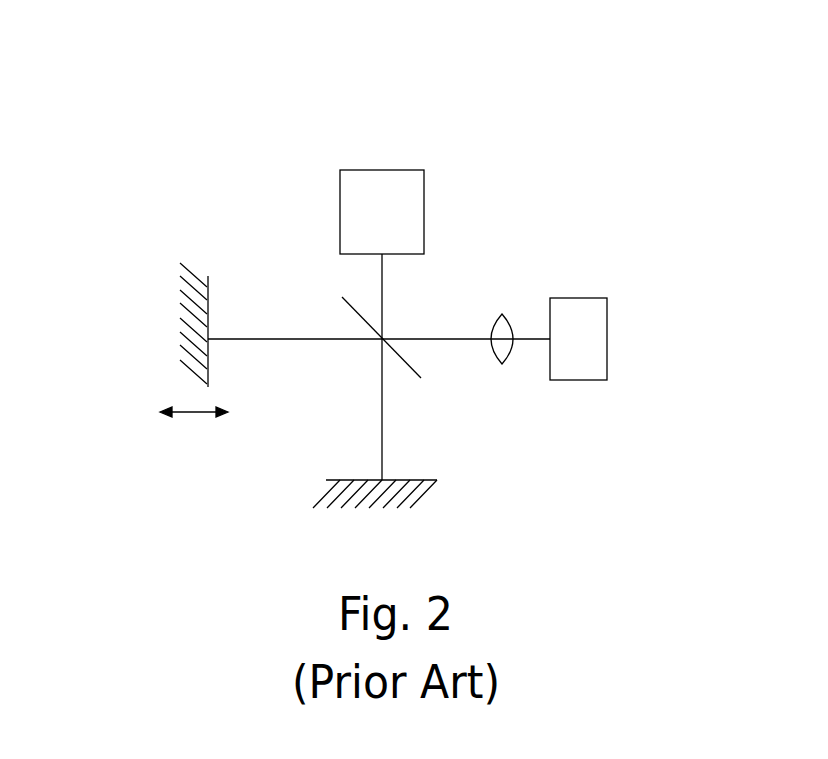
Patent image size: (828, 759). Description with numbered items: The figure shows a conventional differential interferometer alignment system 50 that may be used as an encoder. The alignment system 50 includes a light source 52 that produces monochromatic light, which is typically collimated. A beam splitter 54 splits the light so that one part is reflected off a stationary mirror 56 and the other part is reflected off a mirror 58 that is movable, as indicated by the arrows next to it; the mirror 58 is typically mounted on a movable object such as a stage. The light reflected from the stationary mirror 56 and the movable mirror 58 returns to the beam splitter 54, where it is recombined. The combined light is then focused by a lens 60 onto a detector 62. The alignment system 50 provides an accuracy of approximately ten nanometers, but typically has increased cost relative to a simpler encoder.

The differential interferometer alignment system 50 is at (211, 177).
The light source 52 is at (424, 212).
The beam splitter 54 is at (343, 301).
The stationary mirror 56 is at (410, 480).
The mirror 58 is at (208, 372).
The lens 60 is at (502, 314).
The detector 62 is at (607, 357).